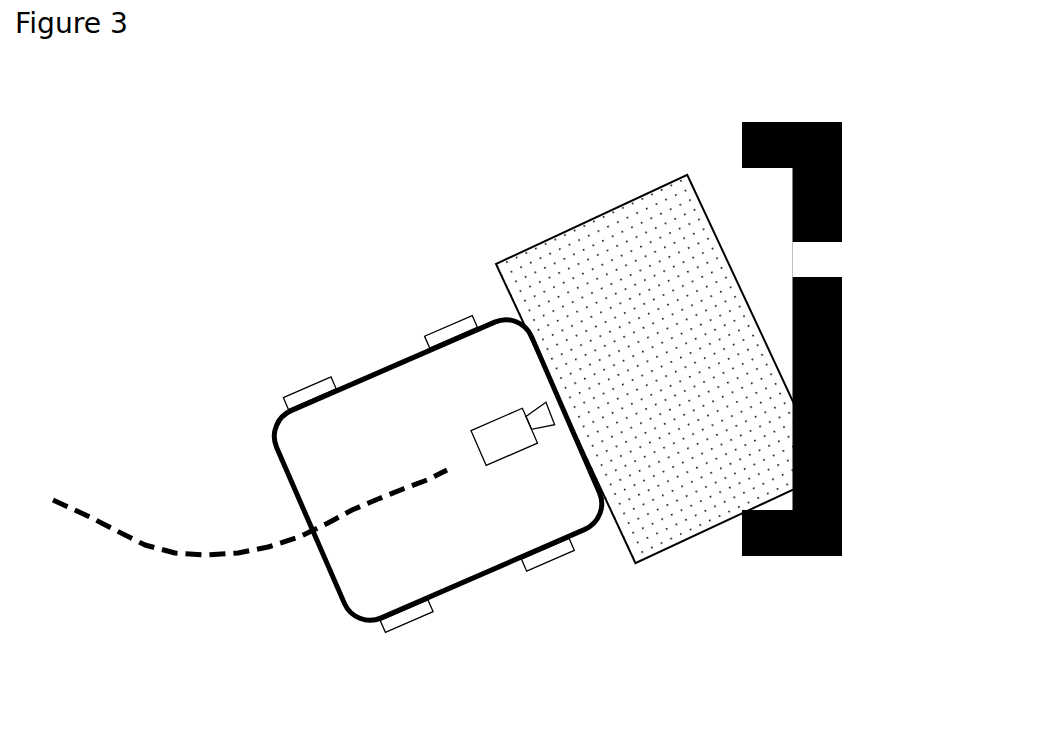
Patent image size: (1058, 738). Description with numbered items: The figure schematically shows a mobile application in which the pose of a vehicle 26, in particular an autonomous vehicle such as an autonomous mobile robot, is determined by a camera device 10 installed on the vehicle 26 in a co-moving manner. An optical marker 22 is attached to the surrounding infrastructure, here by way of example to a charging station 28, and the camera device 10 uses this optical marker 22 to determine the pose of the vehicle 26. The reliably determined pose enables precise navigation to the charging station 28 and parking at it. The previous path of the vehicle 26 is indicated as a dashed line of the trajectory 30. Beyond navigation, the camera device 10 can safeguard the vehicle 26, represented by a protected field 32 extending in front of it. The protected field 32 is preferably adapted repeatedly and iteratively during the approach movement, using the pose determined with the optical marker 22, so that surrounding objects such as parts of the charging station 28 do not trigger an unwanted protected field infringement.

The camera device 10 is at (494, 433).
The optical marker 22 is at (825, 263).
The vehicle 26 is at (307, 457).
The charging station 28 is at (767, 122).
The trajectory 30 is at (178, 552).
The protected field 32 is at (613, 277).